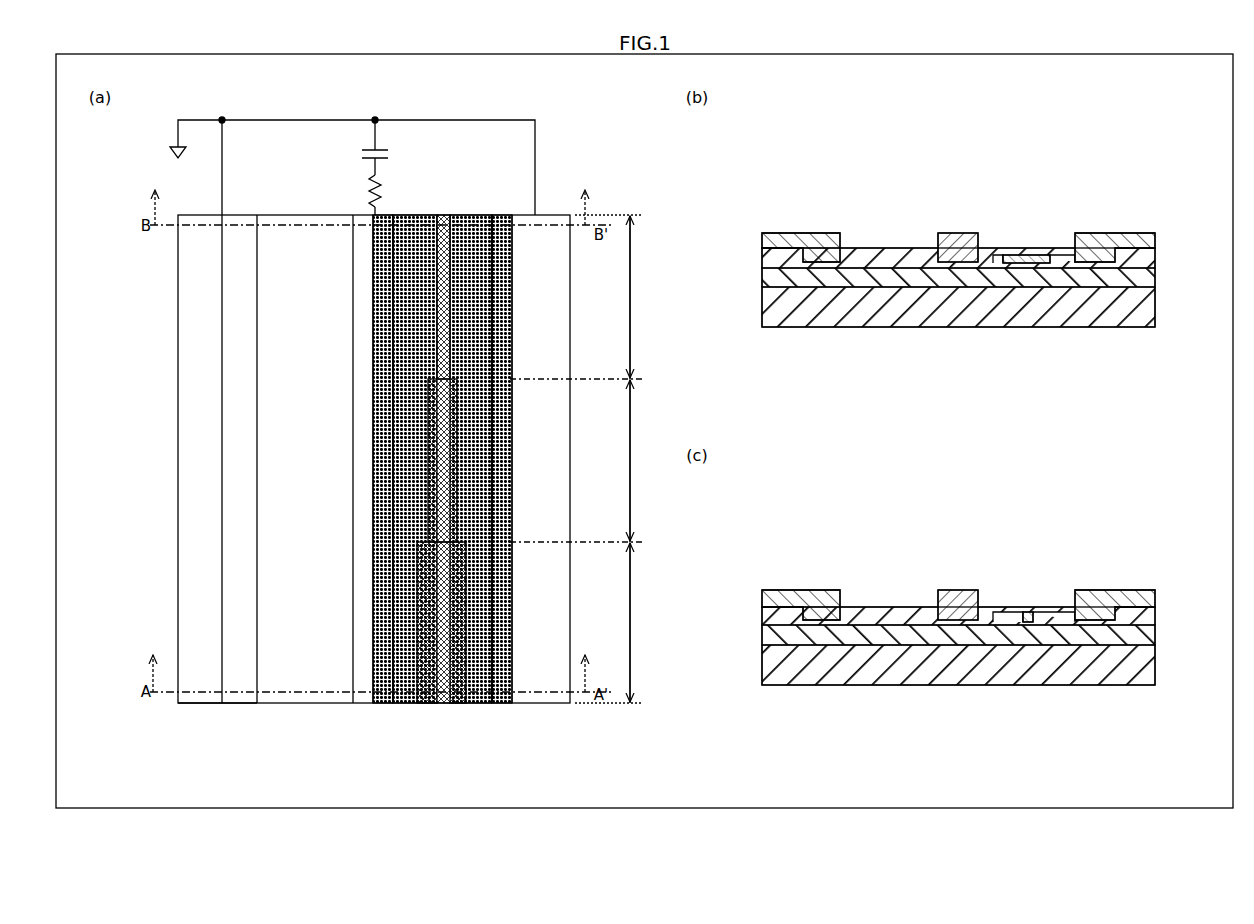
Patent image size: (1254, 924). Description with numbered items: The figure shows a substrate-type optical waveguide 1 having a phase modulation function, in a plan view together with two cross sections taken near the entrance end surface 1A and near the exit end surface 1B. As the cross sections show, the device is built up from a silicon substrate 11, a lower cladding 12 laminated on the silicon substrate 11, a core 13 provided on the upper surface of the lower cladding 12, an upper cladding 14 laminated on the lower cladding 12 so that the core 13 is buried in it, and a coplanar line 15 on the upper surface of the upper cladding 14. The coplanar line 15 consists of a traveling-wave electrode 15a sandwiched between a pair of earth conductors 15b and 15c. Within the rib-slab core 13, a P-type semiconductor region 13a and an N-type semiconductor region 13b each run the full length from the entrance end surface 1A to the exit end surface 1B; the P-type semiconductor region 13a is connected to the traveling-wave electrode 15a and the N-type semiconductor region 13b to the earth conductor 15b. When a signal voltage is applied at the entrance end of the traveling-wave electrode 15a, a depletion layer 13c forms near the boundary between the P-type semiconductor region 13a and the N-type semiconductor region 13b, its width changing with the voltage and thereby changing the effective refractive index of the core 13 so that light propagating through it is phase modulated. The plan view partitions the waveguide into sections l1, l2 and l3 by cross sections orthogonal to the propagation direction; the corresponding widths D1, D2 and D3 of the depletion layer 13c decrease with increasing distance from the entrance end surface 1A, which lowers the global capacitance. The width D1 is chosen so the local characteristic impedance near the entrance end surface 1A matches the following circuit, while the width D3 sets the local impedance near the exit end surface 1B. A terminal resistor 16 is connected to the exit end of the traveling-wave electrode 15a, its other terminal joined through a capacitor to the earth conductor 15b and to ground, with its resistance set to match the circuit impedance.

The substrate-type optical waveguide 1 is at (558, 160).
The entrance end surface 1A is at (195, 708).
The exit end surface 1B is at (190, 213).
The silicon substrate 11 is at (1155, 317).
The lower cladding 12 is at (1155, 283).
The core 13 is at (510, 462).
The P-type semiconductor region 13a is at (398, 708).
The N-type semiconductor region 13b is at (487, 708).
The depletion layer 13c is at (445, 708).
The upper cladding 14 is at (301, 213).
The coplanar line 15 is at (226, 756).
The traveling-wave electrode 15a is at (362, 708).
The earth conductor 15b is at (525, 708).
The earth conductor 15c is at (247, 708).
The terminal resistor 16 is at (385, 193).
The distance D1 is at (417, 622).
The distance D2 is at (428, 458).
The distance D3 is at (412, 297).
The section l1 is at (645, 620).
The section l2 is at (645, 455).
The section l3 is at (645, 290).